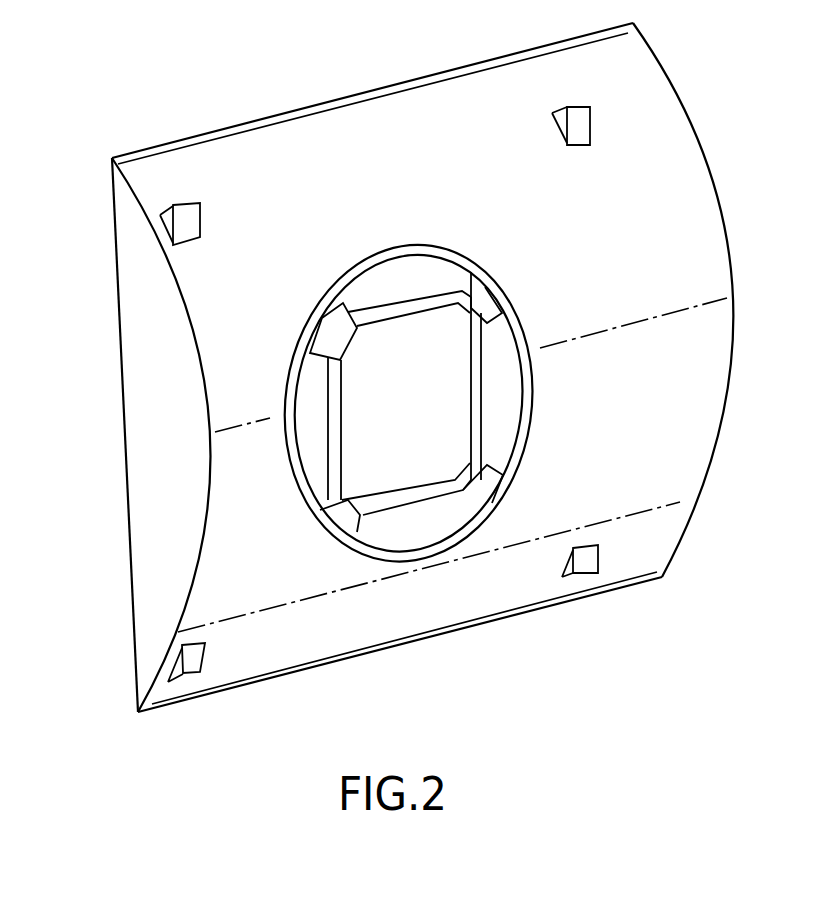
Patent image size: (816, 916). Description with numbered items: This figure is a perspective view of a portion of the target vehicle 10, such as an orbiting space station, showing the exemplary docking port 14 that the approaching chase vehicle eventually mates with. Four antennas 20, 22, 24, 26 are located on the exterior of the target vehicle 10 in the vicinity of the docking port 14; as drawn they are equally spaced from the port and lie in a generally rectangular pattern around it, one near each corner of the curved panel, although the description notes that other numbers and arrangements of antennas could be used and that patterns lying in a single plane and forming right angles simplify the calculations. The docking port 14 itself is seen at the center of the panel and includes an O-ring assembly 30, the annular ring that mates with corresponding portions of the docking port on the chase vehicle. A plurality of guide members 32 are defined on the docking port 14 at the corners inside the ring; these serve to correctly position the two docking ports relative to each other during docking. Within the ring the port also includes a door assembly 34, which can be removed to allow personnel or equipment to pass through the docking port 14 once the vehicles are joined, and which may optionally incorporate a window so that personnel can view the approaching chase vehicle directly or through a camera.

The target vehicle 10 is at (108, 142).
The docking port 14 is at (280, 483).
The antenna 20 is at (182, 218).
The antenna 22 is at (580, 118).
The antenna 24 is at (200, 660).
The antenna 26 is at (587, 557).
The O-ring assembly 30 is at (522, 330).
The guide members 32 is at (338, 322).
The door assembly 34 is at (414, 403).